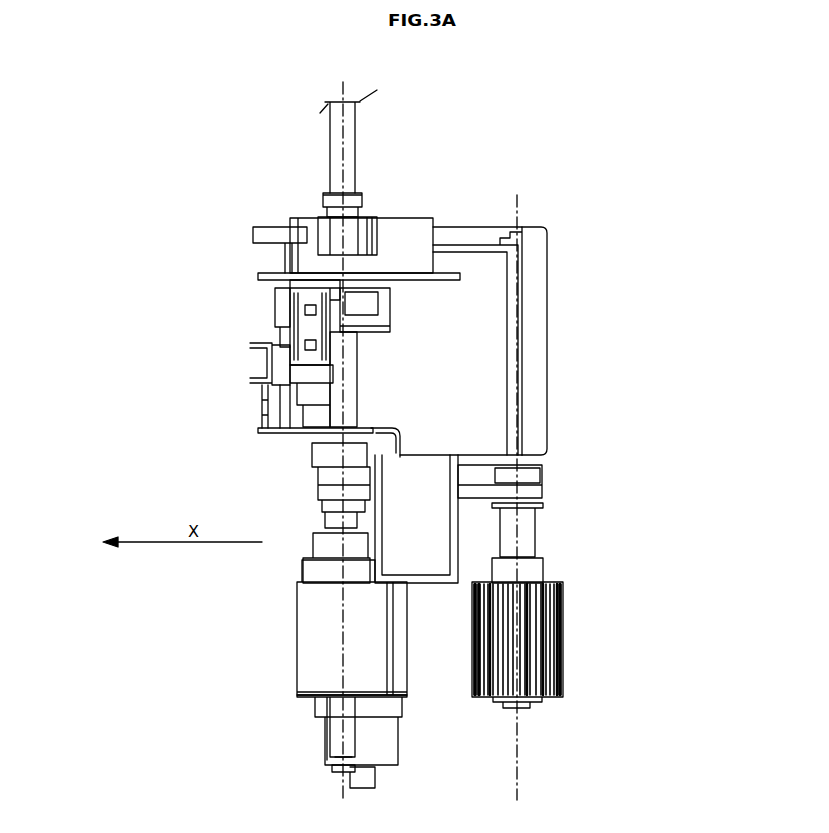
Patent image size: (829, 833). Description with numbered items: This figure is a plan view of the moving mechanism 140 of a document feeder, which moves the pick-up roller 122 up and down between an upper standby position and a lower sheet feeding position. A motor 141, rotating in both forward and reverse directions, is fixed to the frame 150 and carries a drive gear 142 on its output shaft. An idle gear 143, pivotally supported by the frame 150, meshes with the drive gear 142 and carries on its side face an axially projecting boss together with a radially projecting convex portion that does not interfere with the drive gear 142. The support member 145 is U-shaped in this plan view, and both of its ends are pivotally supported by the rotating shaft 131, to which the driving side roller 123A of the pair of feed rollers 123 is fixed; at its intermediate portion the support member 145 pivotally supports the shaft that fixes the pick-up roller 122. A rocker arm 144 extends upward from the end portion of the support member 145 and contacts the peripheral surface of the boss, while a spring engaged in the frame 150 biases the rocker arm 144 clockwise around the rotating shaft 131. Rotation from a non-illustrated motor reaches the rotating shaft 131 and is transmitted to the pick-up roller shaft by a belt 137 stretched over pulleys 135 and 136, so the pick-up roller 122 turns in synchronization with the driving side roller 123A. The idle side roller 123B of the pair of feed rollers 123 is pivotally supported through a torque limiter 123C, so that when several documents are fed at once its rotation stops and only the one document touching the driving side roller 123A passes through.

The rotating shaft 131 is at (329, 149).
The motor 141 is at (410, 223).
The frame 150 is at (260, 277).
The idle gear 143 is at (278, 312).
The drive gear 142 is at (367, 298).
The rocker arm 144 is at (267, 370).
The support member 145 is at (532, 317).
The pulley 135 is at (327, 478).
The pulley 136 is at (535, 478).
The belt 137 is at (535, 492).
The pick-up roller 122 is at (565, 650).
The pair of feed rollers 123 is at (202, 643).
The driving side roller 123A is at (310, 660).
The idle side roller 123B is at (320, 705).
The torque limiter 123C is at (325, 748).
The moving mechanism 140 is at (667, 232).